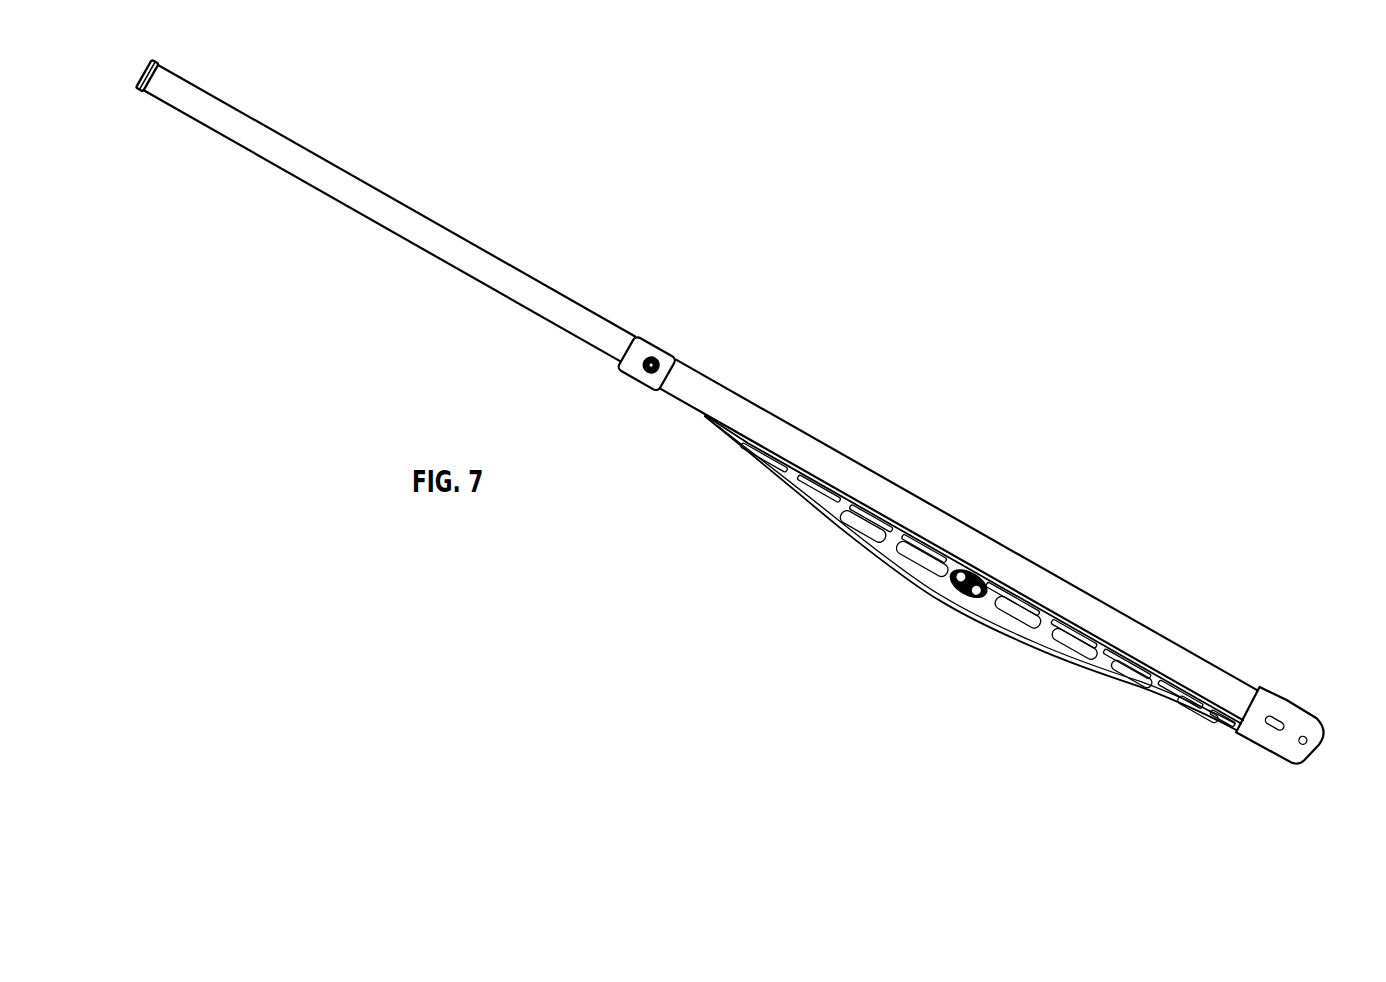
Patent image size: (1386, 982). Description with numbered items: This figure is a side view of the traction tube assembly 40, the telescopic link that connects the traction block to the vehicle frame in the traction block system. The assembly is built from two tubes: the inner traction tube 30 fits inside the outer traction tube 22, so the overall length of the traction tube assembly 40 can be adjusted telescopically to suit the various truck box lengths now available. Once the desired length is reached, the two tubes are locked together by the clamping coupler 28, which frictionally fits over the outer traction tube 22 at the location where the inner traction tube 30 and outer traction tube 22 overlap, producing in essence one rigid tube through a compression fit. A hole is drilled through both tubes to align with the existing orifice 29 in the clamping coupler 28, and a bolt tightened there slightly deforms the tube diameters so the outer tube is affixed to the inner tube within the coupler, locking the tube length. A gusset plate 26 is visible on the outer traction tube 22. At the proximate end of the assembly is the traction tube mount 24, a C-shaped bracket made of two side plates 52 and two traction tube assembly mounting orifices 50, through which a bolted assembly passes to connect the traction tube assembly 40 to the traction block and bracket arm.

The outer traction tube 22 is at (990, 553).
The traction tube mount 24 is at (1300, 755).
The gusset plate 26 is at (846, 522).
The clamping coupler 28 is at (646, 348).
The orifice 29 is at (643, 362).
The inner traction tube 30 is at (368, 207).
The traction tube assembly 40 is at (999, 470).
The traction tube assembly mounting orifices 50 is at (1238, 728).
The side plates 52 is at (1308, 716).